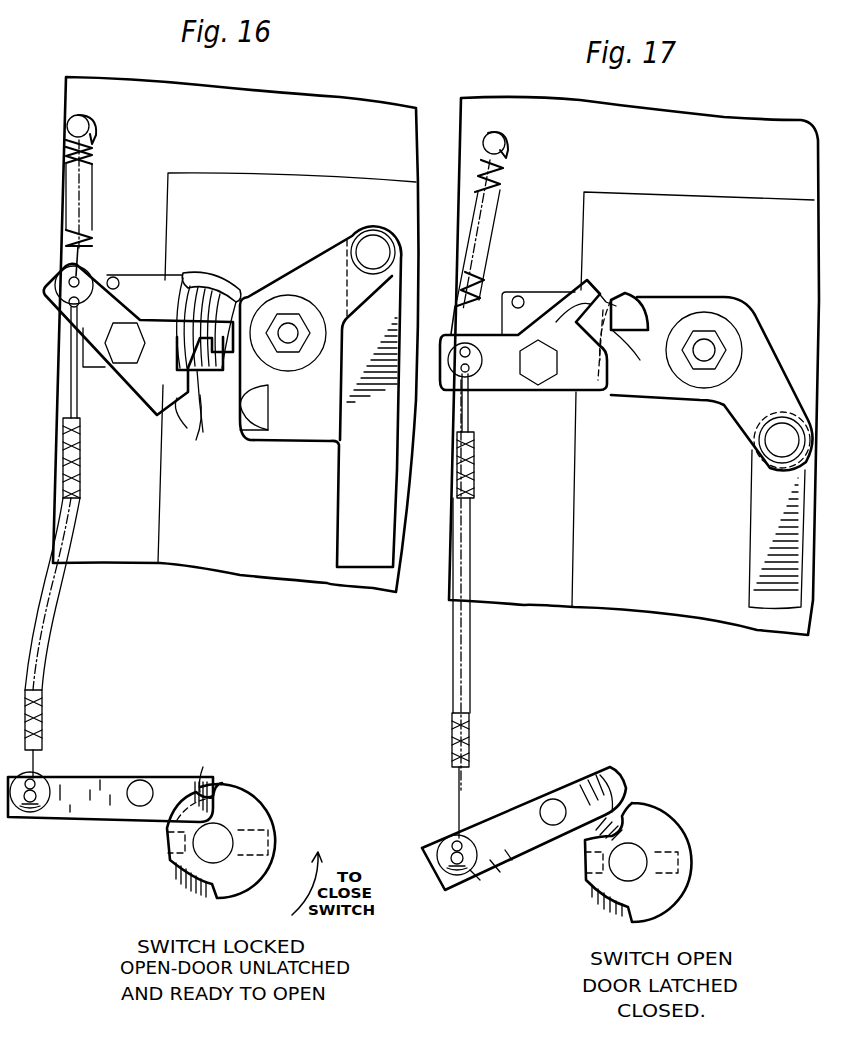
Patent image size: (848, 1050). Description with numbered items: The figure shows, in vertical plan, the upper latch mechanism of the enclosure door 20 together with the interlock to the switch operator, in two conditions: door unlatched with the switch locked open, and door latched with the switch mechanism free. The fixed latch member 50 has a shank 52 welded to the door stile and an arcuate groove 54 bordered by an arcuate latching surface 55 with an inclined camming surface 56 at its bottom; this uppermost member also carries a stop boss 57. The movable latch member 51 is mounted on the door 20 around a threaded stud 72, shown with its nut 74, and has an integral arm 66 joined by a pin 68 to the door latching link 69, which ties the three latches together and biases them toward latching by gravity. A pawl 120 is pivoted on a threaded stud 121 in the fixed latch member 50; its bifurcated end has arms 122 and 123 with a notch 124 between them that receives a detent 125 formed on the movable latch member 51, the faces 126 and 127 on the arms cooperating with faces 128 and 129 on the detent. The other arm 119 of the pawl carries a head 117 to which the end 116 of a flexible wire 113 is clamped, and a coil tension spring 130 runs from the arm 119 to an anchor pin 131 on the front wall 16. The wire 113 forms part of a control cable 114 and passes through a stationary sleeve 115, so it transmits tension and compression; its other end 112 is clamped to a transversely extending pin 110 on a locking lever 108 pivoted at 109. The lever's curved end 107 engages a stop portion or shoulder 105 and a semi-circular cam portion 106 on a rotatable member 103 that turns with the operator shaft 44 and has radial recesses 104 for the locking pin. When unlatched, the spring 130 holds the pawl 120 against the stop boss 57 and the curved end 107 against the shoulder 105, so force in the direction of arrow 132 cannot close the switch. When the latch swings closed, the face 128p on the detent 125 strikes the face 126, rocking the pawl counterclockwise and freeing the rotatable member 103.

In FIG. 16, the front wall 16 is at (317, 108).
In FIG. 17, the front wall 16 is at (716, 128).
In FIG. 16, the door 20 is at (292, 192).
In FIG. 17, the door 20 is at (693, 399).
In FIG. 16, the shaft 44 is at (227, 828).
In FIG. 17, the shaft 44 is at (633, 847).
In FIG. 16, the fixed latch member 50 is at (131, 243).
In FIG. 17, the fixed latch member 50 is at (532, 273).
In FIG. 16, the movable latch member 51 is at (284, 253).
In FIG. 17, the movable latch member 51 is at (766, 281).
In FIG. 16, the shank 52 is at (140, 283).
In FIG. 17, the shank 52 is at (541, 298).
In FIG. 16, the arcuate groove 54 is at (198, 289).
In FIG. 16, the arcuate latching surface 55 is at (217, 286).
In FIG. 16, the inclined camming surface 56 is at (200, 364).
In FIG. 16, the stop boss 57 is at (112, 277).
In FIG. 17, the stop boss 57 is at (516, 296).
In FIG. 16, the arm 66 is at (329, 250).
In FIG. 17, the arm 66 is at (768, 378).
In FIG. 16, the pin 68 is at (374, 252).
In FIG. 17, the pin 68 is at (780, 444).
In FIG. 16, the door latching link 69 is at (340, 512).
In FIG. 17, the door latching link 69 is at (752, 552).
In FIG. 16, the threaded stud 72 is at (291, 330).
In FIG. 17, the threaded stud 72 is at (708, 348).
In FIG. 16, the hex nut 74 is at (305, 328).
In FIG. 17, the hex nut 74 is at (728, 352).
In FIG. 16, the rotatable member 103 is at (265, 761).
In FIG. 17, the rotatable member 103 is at (678, 780).
In FIG. 16, the radially extending recesses 104 is at (168, 840).
In FIG. 17, the radially extending recesses 104 is at (585, 862).
In FIG. 16, the stop portion or shoulder 105 is at (204, 769).
In FIG. 17, the stop portion or shoulder 105 is at (629, 802).
In FIG. 16, the semi-circular cam portion 106 is at (245, 806).
In FIG. 17, the semi-circular cam portion 106 is at (667, 817).
In FIG. 16, the curved end 107 is at (223, 790).
In FIG. 17, the curved end 107 is at (594, 790).
In FIG. 16, the locking lever 108 is at (115, 777).
In FIG. 17, the locking lever 108 is at (552, 788).
In FIG. 16, the pivot 109 is at (146, 790).
In FIG. 17, the pivot 109 is at (542, 806).
In FIG. 16, the transversely extending pin 110 is at (45, 785).
In FIG. 17, the transversely extending pin 110 is at (446, 852).
In FIG. 16, the end of wire 112 is at (42, 748).
In FIG. 17, the end of wire 112 is at (455, 832).
In FIG. 16, the flexible wire 113 is at (76, 412).
In FIG. 17, the flexible wire 113 is at (456, 784).
In FIG. 16, the control cable 114 is at (80, 636).
In FIG. 17, the control cable 114 is at (502, 664).
In FIG. 16, the stationary sleeve 115 is at (77, 520).
In FIG. 17, the stationary sleeve 115 is at (476, 468).
In FIG. 16, the other end of wire 116 is at (70, 314).
In FIG. 17, the other end of wire 116 is at (460, 374).
In FIG. 16, the head 117 is at (64, 282).
In FIG. 17, the head 117 is at (470, 374).
In FIG. 16, the arm of pawl 119 is at (48, 300).
In FIG. 17, the arm of pawl 119 is at (446, 370).
In FIG. 16, the pawl 120 is at (127, 385).
In FIG. 17, the pawl 120 is at (536, 382).
In FIG. 16, the threaded stud 121 is at (130, 338).
In FIG. 17, the threaded stud 121 is at (546, 372).
In FIG. 16, the arm 122 is at (205, 328).
In FIG. 17, the arm 122 is at (603, 284).
In FIG. 16, the arm 123 is at (177, 398).
In FIG. 17, the arm 123 is at (600, 380).
In FIG. 16, the notch 124 is at (199, 436).
In FIG. 17, the notch 124 is at (612, 322).
In FIG. 16, the detent 125 is at (268, 418).
In FIG. 17, the detent 125 is at (636, 300).
In FIG. 16, the face 126 is at (216, 403).
In FIG. 17, the face 126 is at (620, 292).
In FIG. 16, the face 127 is at (185, 440).
In FIG. 17, the face 127 is at (642, 378).
In FIG. 16, the face 128 is at (242, 440).
In FIG. 17, the face 128 is at (594, 296).
In FIG. 16, the face 128p is at (268, 392).
In FIG. 17, the face 128p is at (660, 306).
In FIG. 16, the face 129 is at (296, 442).
In FIG. 17, the face 129 is at (566, 318).
In FIG. 16, the coil tension spring 130 is at (92, 160).
In FIG. 17, the coil tension spring 130 is at (500, 185).
In FIG. 16, the anchor pin 131 is at (82, 124).
In FIG. 17, the anchor pin 131 is at (502, 148).
In FIG. 16, the arrow 132 is at (303, 887).